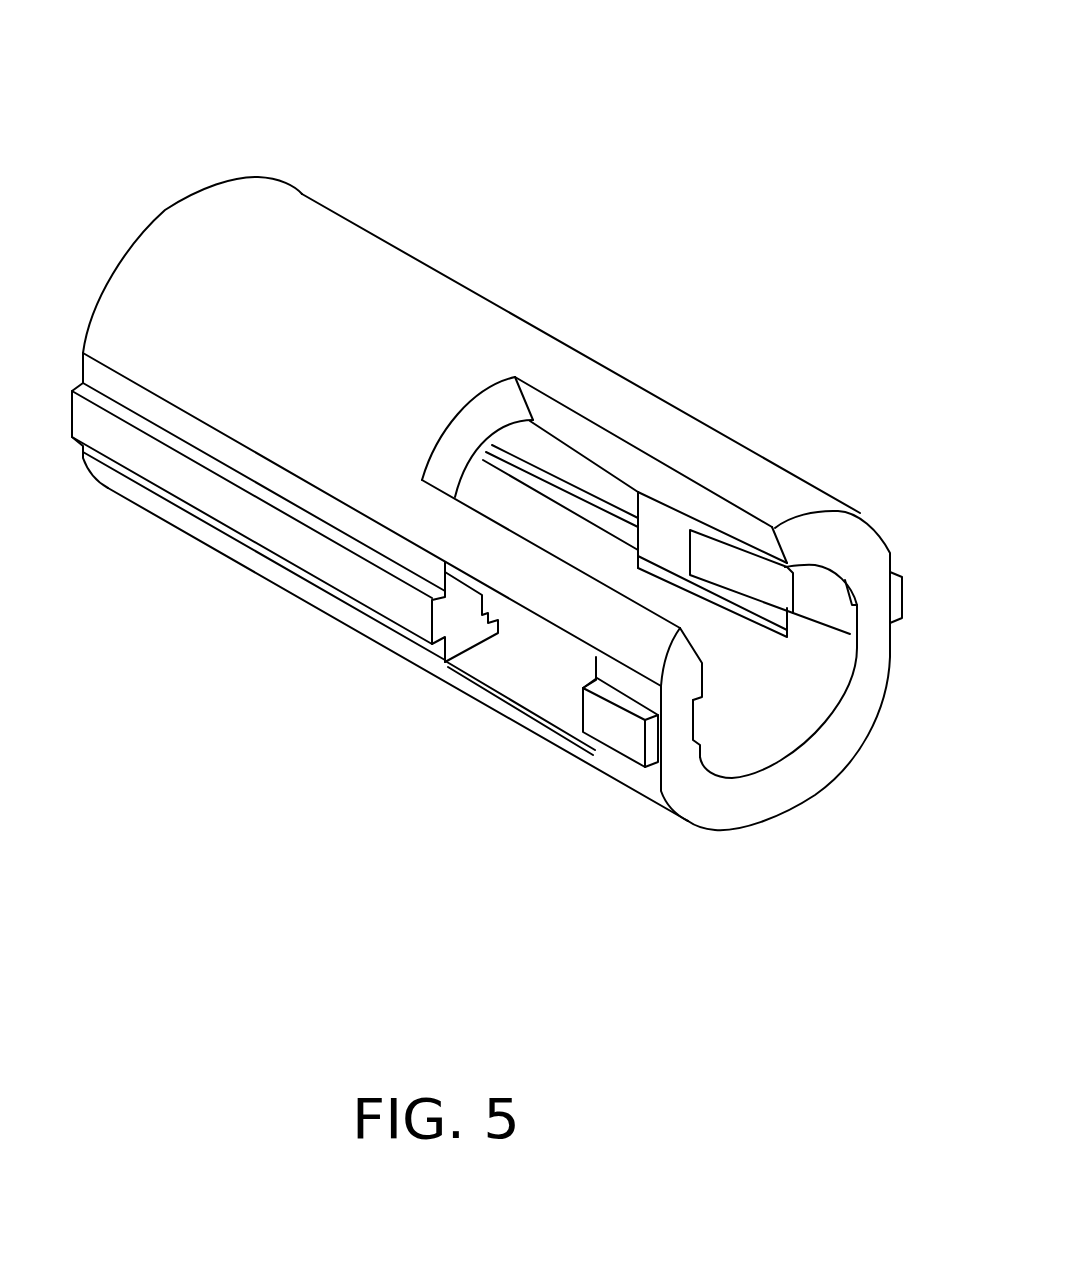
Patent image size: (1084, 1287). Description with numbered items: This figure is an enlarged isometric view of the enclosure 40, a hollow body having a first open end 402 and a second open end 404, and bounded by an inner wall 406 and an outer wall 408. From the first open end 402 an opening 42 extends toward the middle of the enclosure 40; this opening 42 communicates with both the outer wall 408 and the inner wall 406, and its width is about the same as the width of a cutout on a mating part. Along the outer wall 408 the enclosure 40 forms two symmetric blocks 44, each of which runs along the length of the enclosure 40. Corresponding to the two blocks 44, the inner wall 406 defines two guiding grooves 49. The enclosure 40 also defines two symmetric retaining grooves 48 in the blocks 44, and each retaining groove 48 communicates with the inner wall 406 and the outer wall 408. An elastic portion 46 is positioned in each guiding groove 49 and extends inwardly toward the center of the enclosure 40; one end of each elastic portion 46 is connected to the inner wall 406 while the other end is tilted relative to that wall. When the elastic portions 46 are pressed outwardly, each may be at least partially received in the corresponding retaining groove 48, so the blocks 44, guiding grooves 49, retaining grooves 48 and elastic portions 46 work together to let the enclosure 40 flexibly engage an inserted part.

The enclosure 40 is at (454, 61).
The opening 42 is at (587, 435).
The blocks 44 is at (247, 508).
The elastic portion 46 is at (663, 563).
The retaining grooves 48 is at (470, 665).
The guiding grooves 49 is at (843, 623).
The first open end 402 is at (725, 792).
The second open end 404 is at (148, 232).
The inner wall 406 is at (765, 758).
The outer wall 408 is at (385, 292).